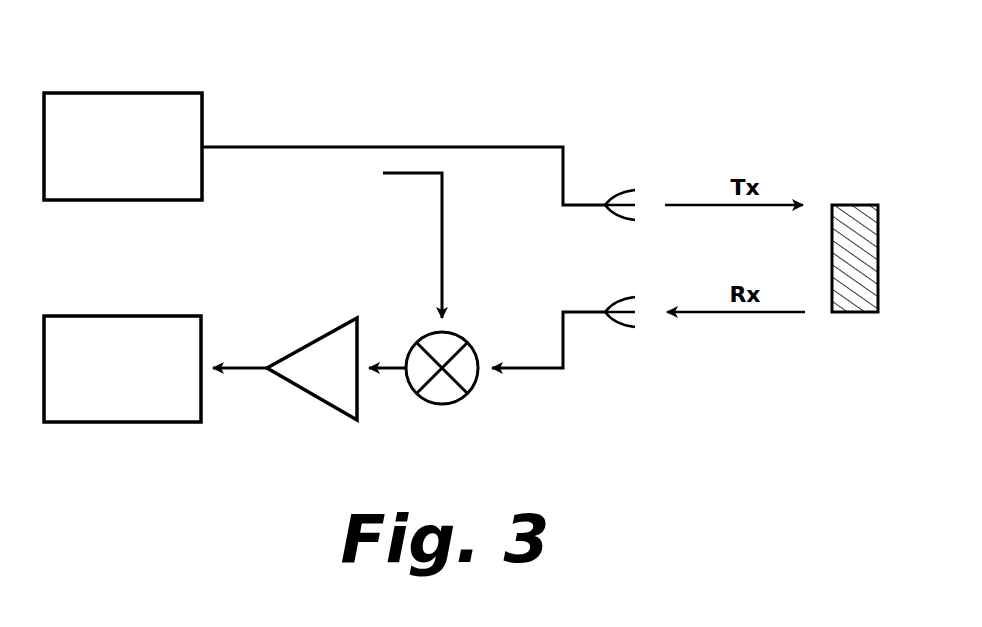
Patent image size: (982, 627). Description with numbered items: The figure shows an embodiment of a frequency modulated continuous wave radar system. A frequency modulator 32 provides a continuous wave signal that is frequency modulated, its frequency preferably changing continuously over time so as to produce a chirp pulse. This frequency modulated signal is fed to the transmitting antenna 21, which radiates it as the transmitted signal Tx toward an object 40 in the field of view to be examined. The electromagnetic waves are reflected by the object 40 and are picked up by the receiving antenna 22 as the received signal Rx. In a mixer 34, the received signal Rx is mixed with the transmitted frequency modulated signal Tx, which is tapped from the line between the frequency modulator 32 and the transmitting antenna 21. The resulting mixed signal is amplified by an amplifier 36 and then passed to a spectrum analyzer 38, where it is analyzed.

The transmitting antenna 21 is at (620, 191).
The receiving antenna 22 is at (617, 324).
The frequency modulator 32 is at (144, 105).
The mixer 34 is at (443, 405).
The amplifier 36 is at (313, 390).
The spectrum analyzer 38 is at (142, 408).
The object 40 is at (852, 205).